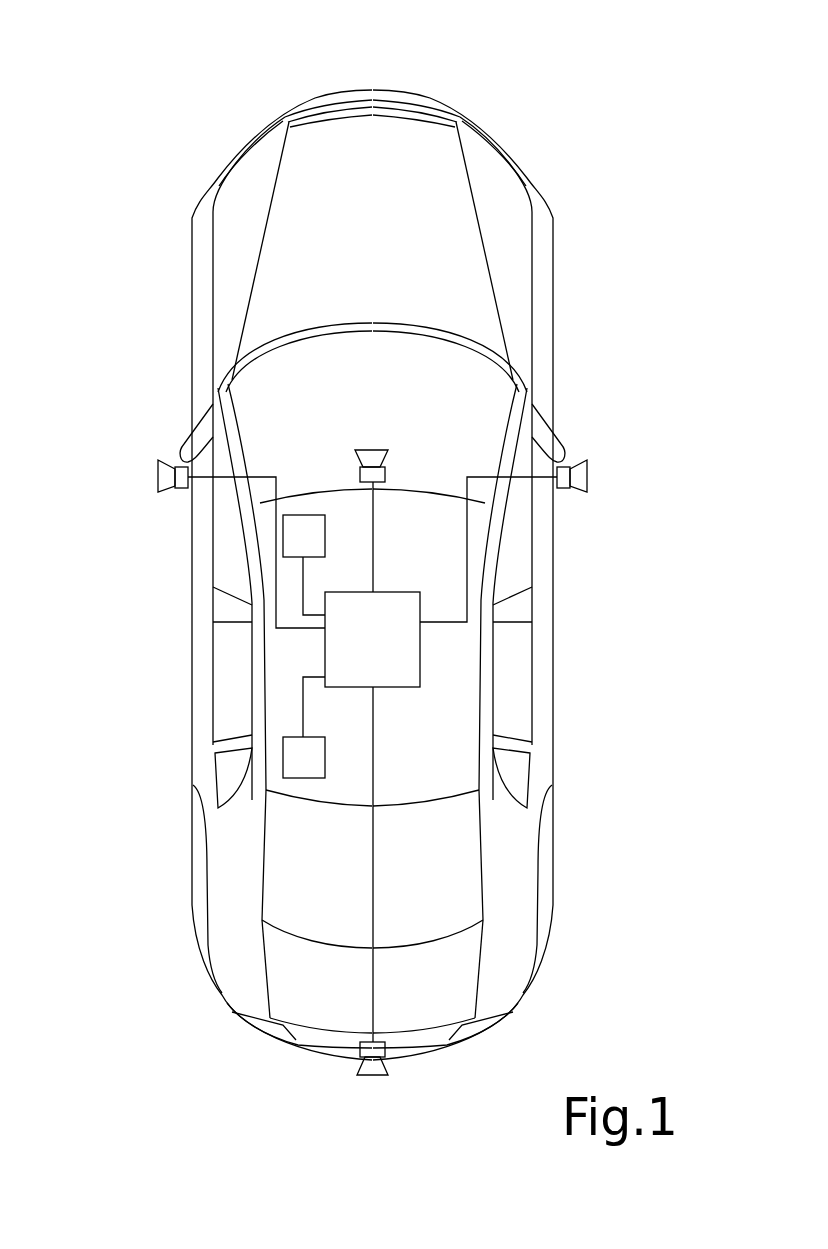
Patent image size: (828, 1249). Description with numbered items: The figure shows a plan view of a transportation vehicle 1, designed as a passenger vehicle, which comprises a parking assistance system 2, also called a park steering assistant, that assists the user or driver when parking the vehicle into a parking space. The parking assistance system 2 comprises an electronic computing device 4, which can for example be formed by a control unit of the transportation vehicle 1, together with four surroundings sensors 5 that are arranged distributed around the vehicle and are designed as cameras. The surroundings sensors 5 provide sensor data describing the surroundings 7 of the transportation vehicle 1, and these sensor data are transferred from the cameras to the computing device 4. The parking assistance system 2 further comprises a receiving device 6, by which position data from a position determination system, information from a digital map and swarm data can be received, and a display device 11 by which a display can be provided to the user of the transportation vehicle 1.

The transportation vehicle 1 is at (377, 88).
The parking assistance system 2 is at (158, 385).
The electronic computing device 4 is at (383, 672).
The surroundings sensor 5 is at (183, 463).
The receiving device 6 is at (297, 780).
The surroundings 7 is at (379, 39).
The display device 11 is at (302, 514).